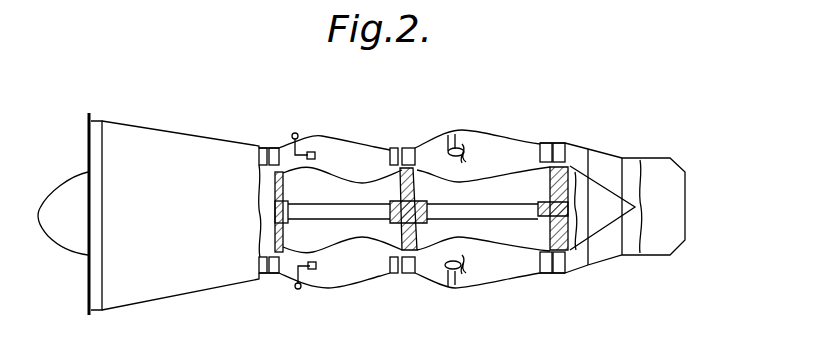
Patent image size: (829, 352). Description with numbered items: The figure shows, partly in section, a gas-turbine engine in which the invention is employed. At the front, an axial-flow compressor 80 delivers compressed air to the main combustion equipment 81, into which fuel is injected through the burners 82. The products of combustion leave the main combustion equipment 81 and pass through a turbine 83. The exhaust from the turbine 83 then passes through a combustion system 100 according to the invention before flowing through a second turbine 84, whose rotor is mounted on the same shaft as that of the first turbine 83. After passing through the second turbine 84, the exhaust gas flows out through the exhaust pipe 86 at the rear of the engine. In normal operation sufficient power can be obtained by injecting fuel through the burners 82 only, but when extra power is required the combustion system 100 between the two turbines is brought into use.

The axial-flow compressor 80 is at (183, 147).
The main combustion equipment 81 is at (337, 147).
The burners 82 is at (306, 146).
The turbine 83 is at (423, 148).
The second turbine 84 is at (568, 186).
The exhaust pipe 86 is at (613, 157).
The combustion system 100 is at (465, 152).